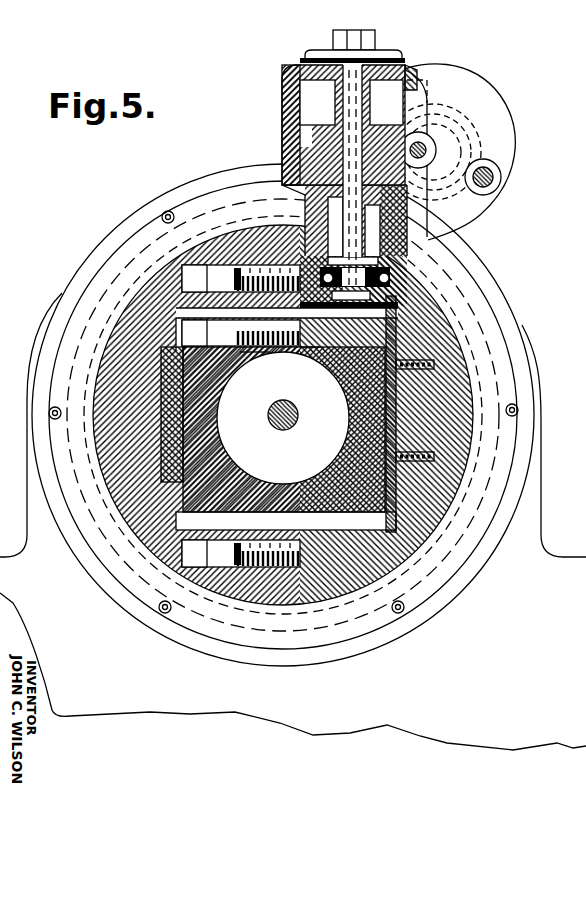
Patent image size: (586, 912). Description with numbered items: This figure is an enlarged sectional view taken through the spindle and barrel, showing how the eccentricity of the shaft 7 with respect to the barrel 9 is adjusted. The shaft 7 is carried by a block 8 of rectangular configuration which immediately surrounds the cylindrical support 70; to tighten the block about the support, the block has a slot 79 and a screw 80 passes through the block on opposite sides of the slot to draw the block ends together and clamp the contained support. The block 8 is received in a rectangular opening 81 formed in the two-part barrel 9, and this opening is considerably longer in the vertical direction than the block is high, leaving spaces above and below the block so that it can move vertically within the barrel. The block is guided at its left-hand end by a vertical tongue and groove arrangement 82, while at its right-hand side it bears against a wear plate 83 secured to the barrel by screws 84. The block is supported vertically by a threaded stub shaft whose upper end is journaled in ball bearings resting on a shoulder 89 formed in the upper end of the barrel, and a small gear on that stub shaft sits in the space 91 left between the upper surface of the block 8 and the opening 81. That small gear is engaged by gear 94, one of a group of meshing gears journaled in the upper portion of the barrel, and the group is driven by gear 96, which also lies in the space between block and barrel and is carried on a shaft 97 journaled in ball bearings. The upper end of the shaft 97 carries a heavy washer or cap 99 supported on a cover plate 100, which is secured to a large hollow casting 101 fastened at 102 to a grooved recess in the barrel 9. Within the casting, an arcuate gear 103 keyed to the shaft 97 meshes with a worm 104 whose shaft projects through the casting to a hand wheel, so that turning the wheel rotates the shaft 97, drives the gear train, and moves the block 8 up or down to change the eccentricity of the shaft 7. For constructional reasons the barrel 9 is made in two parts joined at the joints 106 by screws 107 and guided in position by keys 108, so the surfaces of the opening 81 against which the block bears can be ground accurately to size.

The shaft 7 is at (268, 413).
The block member 8 is at (183, 532).
The barrel 9 is at (428, 312).
The cylindrical support 70 is at (319, 405).
The slot 79 is at (262, 353).
The screw 80 is at (213, 334).
The rectangular opening 81 is at (350, 523).
The tongue and groove arrangement 82 is at (183, 455).
The wear plate 83 is at (400, 387).
The screws 84 is at (472, 410).
The shoulder 89 is at (395, 268).
The space 91 is at (309, 349).
The gear 94 is at (370, 281).
The gear 96 is at (402, 295).
The shaft 97 is at (343, 100).
The washer or cap 99 is at (320, 52).
The cover plate 100 is at (284, 72).
The hollow casting 101 is at (284, 131).
The securing point 102 is at (423, 196).
The arcuate gear 103 is at (386, 125).
The worm 104 is at (421, 147).
The joints 106 is at (230, 263).
The screws 107 is at (183, 281).
The keys 108 is at (237, 270).